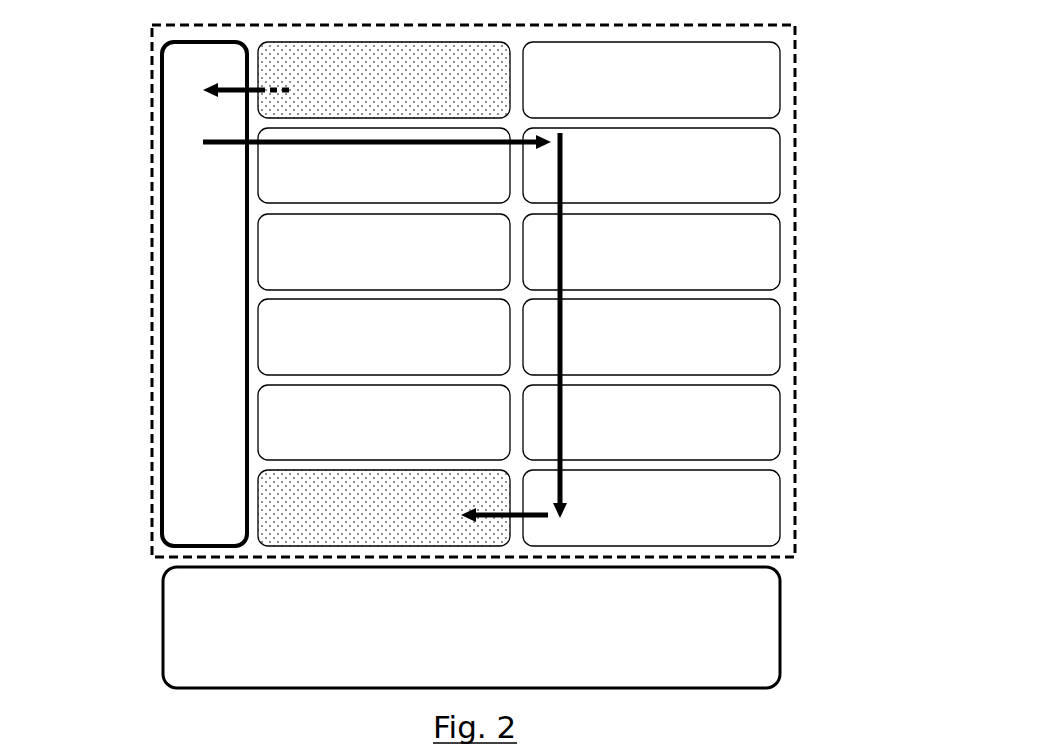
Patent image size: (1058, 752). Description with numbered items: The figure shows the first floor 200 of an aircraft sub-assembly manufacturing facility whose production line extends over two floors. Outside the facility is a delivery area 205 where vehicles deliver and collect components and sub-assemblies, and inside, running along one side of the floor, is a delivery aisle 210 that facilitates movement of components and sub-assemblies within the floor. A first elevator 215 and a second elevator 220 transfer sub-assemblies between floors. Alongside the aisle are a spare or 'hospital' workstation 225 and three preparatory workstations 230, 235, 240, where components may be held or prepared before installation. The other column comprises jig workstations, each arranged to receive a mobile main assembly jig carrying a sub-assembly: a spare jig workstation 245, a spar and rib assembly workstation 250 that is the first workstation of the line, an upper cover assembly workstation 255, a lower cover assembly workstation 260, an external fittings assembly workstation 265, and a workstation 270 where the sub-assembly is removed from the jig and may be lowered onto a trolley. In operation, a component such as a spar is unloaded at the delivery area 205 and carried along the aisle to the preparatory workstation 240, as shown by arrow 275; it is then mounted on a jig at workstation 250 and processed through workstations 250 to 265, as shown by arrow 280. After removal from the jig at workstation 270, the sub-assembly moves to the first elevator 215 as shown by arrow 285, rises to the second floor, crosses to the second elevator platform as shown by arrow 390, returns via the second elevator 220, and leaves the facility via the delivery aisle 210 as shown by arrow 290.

The first floor 200 is at (149, 422).
The delivery area 205 is at (494, 643).
The delivery aisle 210 is at (204, 294).
The first elevator 215 is at (406, 524).
The second elevator 220 is at (418, 96).
The spare workstation 225 is at (406, 438).
The preparatory workstation 230 is at (406, 353).
The preparatory workstation 235 is at (406, 268).
The preparatory workstation 240 is at (406, 181).
The spare jig workstation 245 is at (673, 96).
The spar and rib assembly workstation 250 is at (673, 181).
The upper cover assembly workstation 255 is at (673, 268).
The lower cover assembly workstation 260 is at (673, 353).
The external fittings assembly workstation 265 is at (673, 438).
The jig removal workstation 270 is at (673, 524).
The arrow 275 is at (297, 142).
The arrow 280 is at (560, 318).
The arrow 285 is at (543, 520).
The arrow 290 is at (229, 86).
The arrow 390 is at (643, 751).